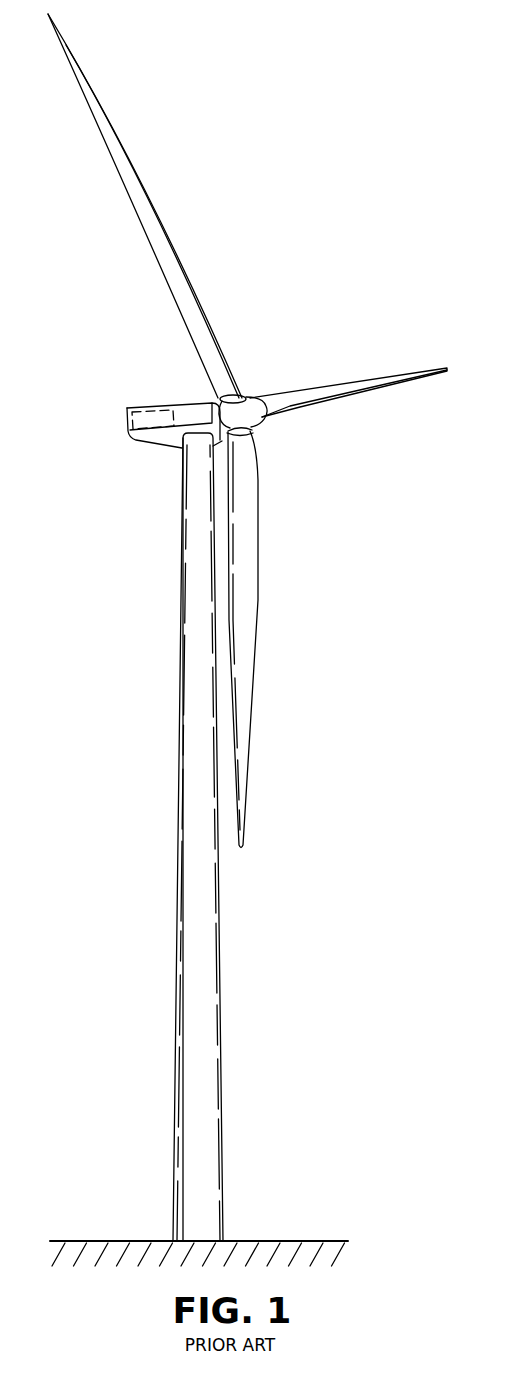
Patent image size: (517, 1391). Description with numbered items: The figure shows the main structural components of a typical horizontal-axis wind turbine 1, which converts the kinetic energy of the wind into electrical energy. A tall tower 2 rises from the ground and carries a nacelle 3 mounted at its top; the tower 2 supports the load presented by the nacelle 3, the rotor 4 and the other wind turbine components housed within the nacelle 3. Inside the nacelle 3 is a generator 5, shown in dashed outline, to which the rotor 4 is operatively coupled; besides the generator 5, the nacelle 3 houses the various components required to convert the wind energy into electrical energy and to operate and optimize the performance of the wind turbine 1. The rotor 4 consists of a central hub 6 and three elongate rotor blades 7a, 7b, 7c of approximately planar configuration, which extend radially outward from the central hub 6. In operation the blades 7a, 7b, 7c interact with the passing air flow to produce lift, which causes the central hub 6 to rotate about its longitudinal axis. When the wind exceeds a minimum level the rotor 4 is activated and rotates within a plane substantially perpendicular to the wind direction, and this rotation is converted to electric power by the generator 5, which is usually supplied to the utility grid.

The wind turbine 1 is at (336, 164).
The tower 2 is at (183, 1024).
The nacelle 3 is at (153, 406).
The rotor 4 is at (249, 396).
The generator 5 is at (135, 422).
The central hub 6 is at (265, 432).
The rotor blade 7a is at (114, 156).
The rotor blade 7b is at (331, 395).
The rotor blade 7c is at (258, 622).